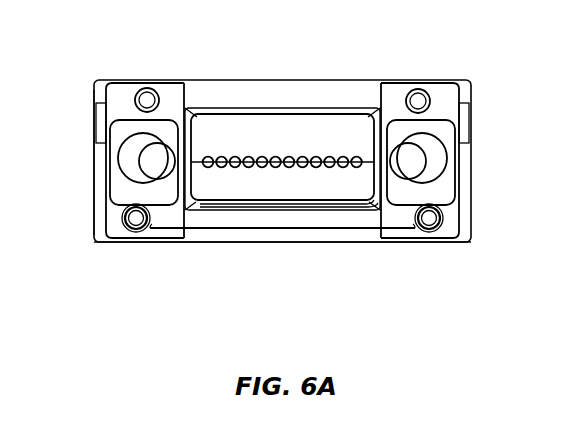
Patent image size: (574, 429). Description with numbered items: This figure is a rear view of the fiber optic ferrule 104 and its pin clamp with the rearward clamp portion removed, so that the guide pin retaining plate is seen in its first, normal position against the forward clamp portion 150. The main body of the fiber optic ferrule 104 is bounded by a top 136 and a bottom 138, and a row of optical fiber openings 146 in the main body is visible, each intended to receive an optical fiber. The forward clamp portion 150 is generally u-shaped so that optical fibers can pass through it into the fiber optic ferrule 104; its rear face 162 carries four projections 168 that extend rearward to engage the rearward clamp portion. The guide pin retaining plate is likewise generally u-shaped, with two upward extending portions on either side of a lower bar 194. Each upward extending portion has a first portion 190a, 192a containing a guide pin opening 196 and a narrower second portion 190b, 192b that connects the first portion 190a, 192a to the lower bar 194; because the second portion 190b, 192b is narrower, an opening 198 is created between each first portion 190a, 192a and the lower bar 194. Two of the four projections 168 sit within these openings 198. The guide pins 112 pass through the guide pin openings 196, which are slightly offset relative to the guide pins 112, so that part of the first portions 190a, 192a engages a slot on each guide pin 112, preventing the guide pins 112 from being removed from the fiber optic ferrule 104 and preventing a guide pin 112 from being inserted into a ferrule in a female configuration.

The fiber optic ferrule 104 is at (472, 84).
The guide pins 112 is at (157, 150).
The top 136 is at (345, 80).
The bottom 138 is at (98, 243).
The optical fiber openings 146 is at (320, 158).
The forward clamp portion 150 is at (121, 86).
The rear face 162 is at (417, 100).
The projections 168 is at (136, 223).
The first portion 190a is at (110, 183).
The second portion 190b is at (110, 215).
The first portion 192a is at (447, 127).
The second portion 192b is at (452, 212).
The lower bar 194 is at (325, 245).
The guide pin openings 196 is at (118, 160).
The opening 198 is at (158, 217).